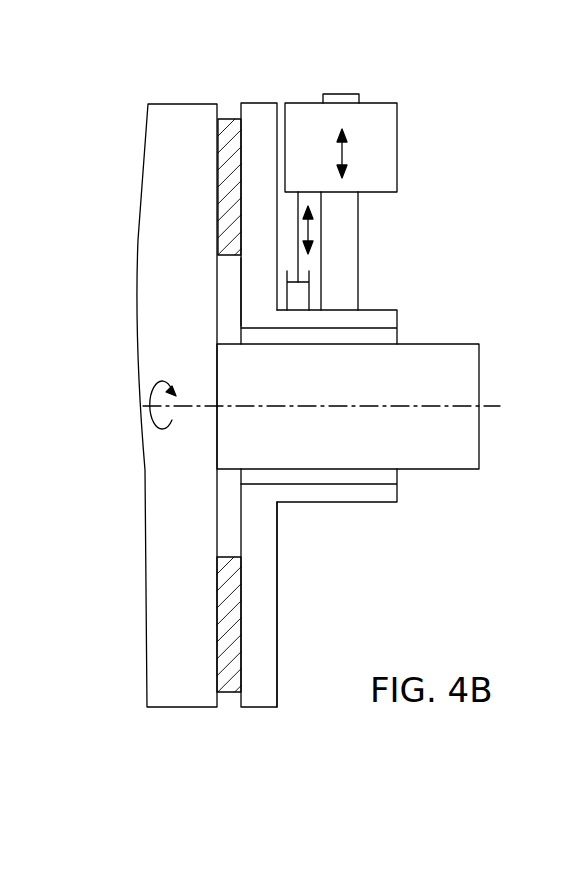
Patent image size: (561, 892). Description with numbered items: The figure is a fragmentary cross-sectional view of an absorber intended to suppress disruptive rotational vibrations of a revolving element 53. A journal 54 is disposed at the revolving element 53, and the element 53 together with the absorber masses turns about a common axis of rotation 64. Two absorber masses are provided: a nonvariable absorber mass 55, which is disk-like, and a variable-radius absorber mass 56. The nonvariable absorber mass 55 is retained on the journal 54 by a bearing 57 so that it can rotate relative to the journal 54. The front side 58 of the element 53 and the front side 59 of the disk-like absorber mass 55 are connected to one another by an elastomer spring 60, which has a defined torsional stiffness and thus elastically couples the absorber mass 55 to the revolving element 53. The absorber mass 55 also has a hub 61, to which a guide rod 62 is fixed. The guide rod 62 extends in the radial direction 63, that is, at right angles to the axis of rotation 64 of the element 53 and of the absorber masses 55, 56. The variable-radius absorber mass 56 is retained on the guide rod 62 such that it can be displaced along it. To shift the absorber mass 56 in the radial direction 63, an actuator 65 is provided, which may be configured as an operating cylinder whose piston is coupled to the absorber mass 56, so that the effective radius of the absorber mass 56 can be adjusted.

The revolving element 53 is at (165, 678).
The journal 54 is at (448, 445).
The nonvariable absorber mass 55 is at (258, 128).
The variable-radius absorber mass 56 is at (363, 116).
The bearing 57 is at (373, 337).
The front side of the element 58 is at (217, 275).
The front side of the absorber mass 59 is at (240, 298).
The elastomer spring 60 is at (228, 673).
The hub 61 is at (345, 492).
The guide rod 62 is at (341, 240).
The radial direction 63 is at (343, 155).
The axis of rotation 64 is at (198, 407).
The actuator 65 is at (298, 291).